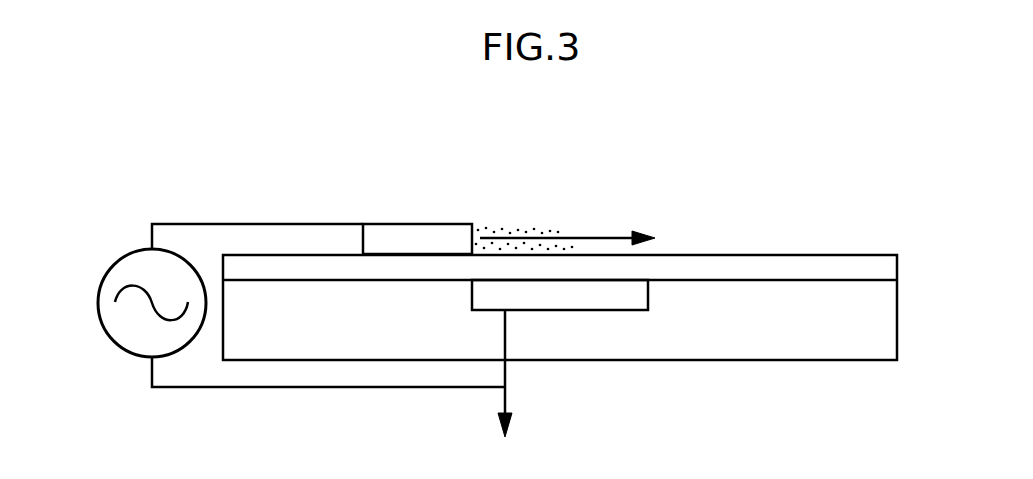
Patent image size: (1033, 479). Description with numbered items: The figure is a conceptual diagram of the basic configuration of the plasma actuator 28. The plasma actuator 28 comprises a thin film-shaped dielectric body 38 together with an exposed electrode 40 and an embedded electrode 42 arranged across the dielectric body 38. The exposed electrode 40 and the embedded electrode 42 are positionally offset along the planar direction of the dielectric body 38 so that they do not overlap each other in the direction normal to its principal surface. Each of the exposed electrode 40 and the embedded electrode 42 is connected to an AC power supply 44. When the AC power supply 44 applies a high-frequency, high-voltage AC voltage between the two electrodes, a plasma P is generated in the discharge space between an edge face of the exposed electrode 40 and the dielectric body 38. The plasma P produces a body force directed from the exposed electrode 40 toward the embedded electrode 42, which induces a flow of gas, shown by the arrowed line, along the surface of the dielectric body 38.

The plasma actuator 28 is at (760, 115).
The dielectric body 38 is at (798, 266).
The exposed electrode 40 is at (420, 228).
The embedded electrode 42 is at (608, 298).
The AC power supply 44 is at (110, 264).
The plasma P is at (514, 226).